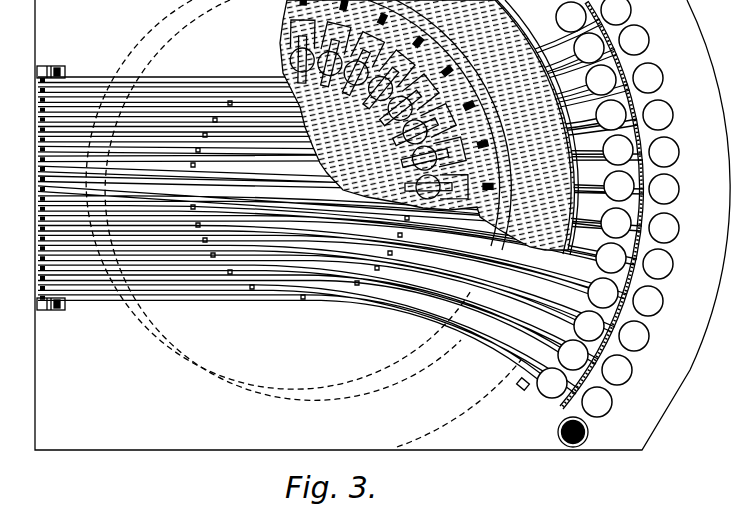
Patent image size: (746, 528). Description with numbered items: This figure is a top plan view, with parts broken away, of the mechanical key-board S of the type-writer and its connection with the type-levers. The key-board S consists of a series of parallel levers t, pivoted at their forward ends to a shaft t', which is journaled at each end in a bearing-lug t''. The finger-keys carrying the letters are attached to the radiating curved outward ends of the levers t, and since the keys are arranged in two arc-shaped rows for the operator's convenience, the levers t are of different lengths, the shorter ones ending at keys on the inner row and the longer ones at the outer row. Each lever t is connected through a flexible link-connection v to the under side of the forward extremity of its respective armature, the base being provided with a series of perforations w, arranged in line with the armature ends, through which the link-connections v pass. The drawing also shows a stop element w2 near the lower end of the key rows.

The parallel levers t is at (341, 206).
The shaft t' is at (34, 299).
The bearing-lug t'' is at (34, 185).
The mechanical key-board S is at (660, 53).
The flexible link-connection v is at (608, 208).
The perforations w is at (557, 432).
The key stop block w2 is at (520, 389).